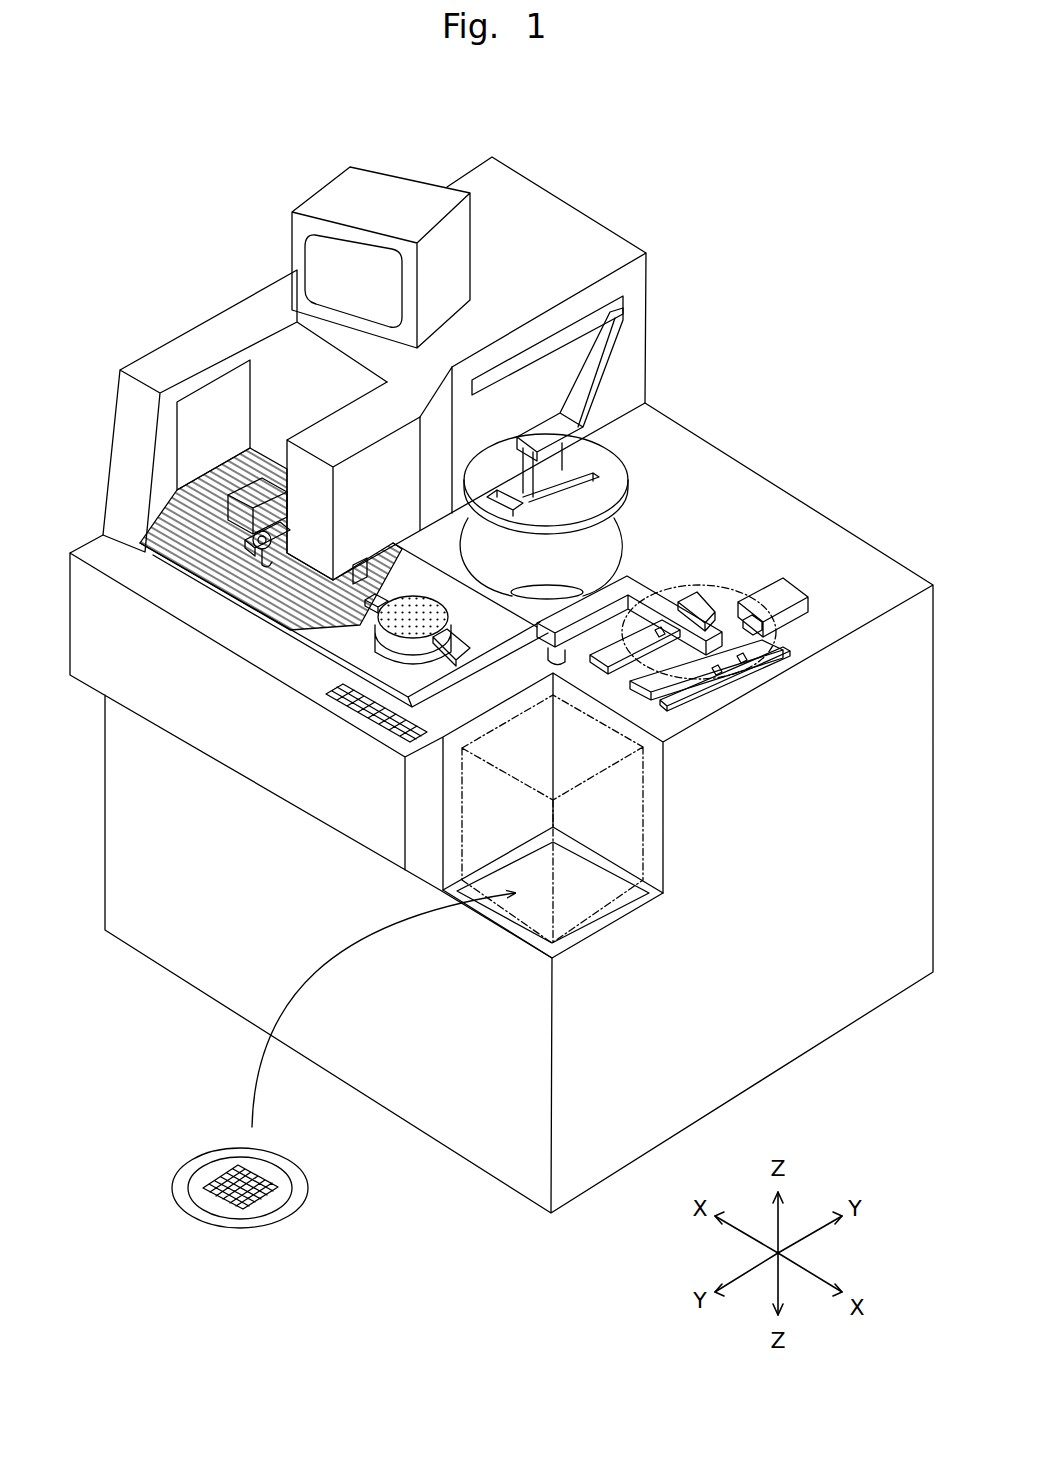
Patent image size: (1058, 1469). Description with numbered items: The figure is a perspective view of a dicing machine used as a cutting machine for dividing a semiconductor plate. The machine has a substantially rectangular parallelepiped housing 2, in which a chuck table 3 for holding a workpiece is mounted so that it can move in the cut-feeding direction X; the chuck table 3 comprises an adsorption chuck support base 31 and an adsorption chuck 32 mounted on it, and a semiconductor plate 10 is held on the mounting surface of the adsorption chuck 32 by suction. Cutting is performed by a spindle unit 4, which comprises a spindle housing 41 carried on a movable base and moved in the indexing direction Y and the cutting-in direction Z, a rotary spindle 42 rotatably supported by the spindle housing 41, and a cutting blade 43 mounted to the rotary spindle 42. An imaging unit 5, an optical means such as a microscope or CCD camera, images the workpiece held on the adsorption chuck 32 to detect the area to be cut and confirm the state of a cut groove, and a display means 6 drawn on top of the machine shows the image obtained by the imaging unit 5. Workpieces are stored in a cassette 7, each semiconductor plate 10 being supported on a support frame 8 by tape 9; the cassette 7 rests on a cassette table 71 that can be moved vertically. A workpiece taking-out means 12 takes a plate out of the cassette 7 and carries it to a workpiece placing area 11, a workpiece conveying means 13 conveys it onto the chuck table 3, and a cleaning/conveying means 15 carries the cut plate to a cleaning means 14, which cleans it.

The housing 2 is at (737, 458).
The chuck table 3 is at (368, 635).
The spindle unit 4 is at (252, 470).
The imaging unit 5 is at (355, 562).
The display monitor 6 is at (377, 190).
The cassette 7 is at (645, 798).
The support frame 8 is at (263, 1218).
The tape 9 is at (210, 1203).
The semiconductor plate 10 is at (223, 1173).
The workpiece placing area 11 is at (658, 670).
The workpiece taking-out means 12 is at (785, 587).
The workpiece conveying means 13 is at (650, 593).
The cleaning means 14 is at (607, 543).
The cleaning/conveying means 15 is at (593, 353).
The adsorption chuck support base 31 is at (400, 657).
The adsorption chuck 32 is at (433, 600).
The spindle housing 41 is at (282, 483).
The rotary spindle 42 is at (255, 552).
The cutting blade 43 is at (242, 533).
The cassette table 71 is at (532, 916).